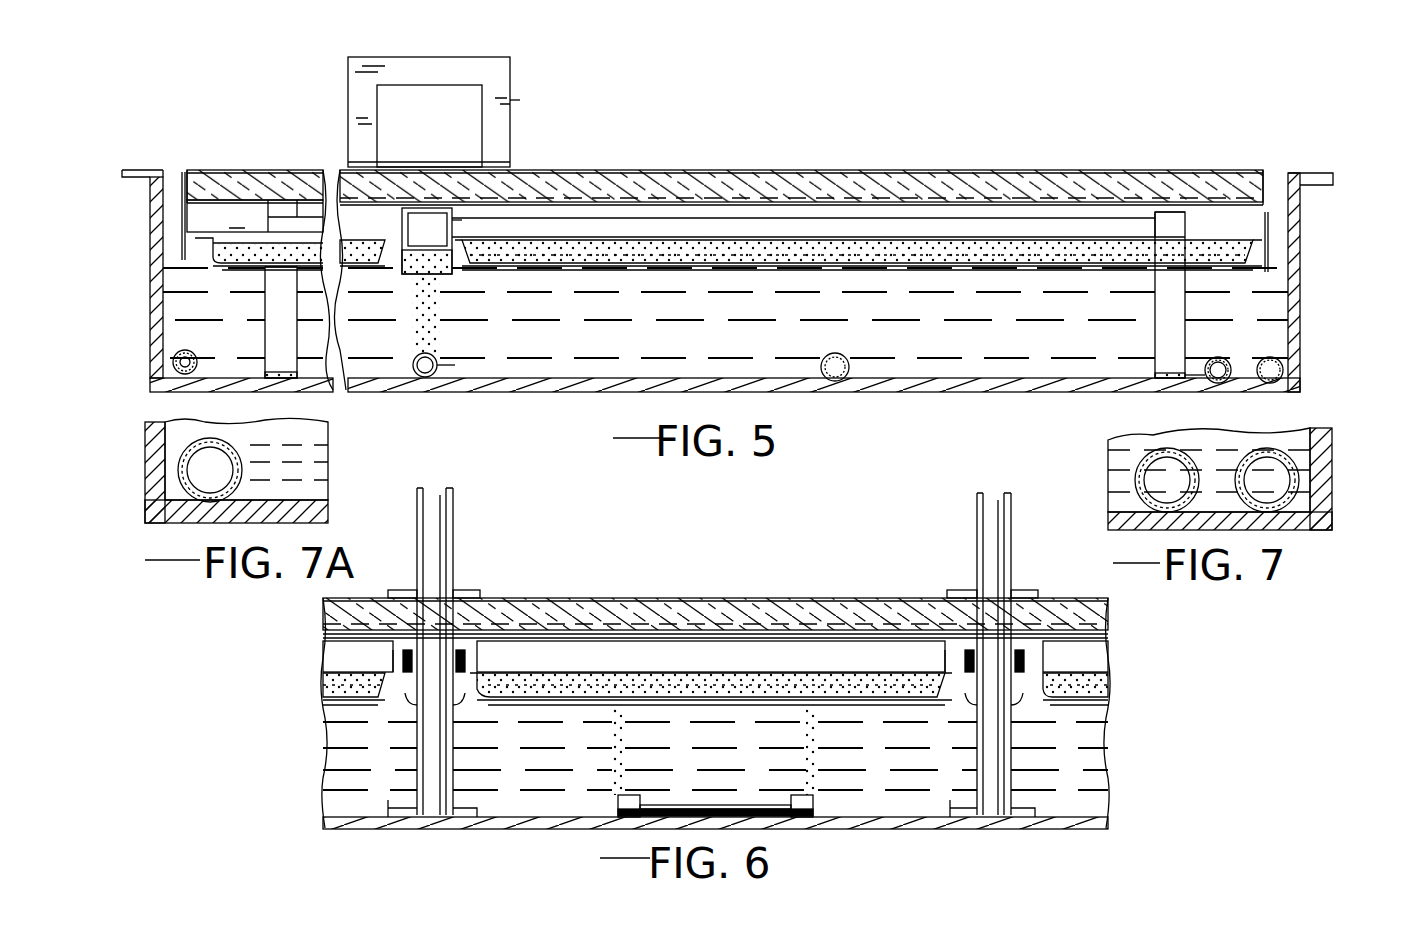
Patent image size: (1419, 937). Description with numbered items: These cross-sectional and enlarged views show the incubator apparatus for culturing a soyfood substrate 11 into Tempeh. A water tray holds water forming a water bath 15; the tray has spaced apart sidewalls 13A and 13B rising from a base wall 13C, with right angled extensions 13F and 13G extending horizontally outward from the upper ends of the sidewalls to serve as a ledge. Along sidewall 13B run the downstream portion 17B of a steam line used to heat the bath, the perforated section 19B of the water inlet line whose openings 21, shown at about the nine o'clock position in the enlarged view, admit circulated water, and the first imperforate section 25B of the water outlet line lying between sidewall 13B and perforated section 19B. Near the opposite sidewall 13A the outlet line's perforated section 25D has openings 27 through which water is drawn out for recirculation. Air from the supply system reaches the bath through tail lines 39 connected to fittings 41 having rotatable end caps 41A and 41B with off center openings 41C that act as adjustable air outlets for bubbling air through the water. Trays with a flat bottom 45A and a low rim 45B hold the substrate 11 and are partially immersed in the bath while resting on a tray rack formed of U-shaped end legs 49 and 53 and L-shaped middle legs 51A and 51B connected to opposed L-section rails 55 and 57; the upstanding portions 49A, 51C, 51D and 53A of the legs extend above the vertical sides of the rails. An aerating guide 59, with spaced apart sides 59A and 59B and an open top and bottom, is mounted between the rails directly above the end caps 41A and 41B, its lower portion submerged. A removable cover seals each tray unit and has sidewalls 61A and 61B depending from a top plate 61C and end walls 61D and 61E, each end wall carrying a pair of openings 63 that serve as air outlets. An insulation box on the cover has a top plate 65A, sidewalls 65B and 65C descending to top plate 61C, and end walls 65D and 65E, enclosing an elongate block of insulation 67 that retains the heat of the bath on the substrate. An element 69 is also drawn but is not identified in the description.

In FIG. 5, the soyfood substrate 11 is at (950, 245).
In FIG. 6, the soyfood substrate 11 is at (720, 683).
In FIG. 5, the sidewall 13A is at (150, 240).
In FIG. 7A, the sidewall 13A is at (148, 485).
In FIG. 5, the sidewall 13B is at (1300, 282).
In FIG. 7, the sidewall 13B is at (1332, 500).
In FIG. 5, the base wall 13C is at (910, 393).
In FIG. 7A, the base wall 13C is at (322, 519).
In FIG. 7, the base wall 13C is at (1120, 515).
In FIG. 6, the base wall 13C is at (900, 833).
In FIG. 5, the right angled extension 13F is at (127, 167).
In FIG. 5, the right angled extension 13G is at (1335, 173).
In FIG. 5, the water bath 15 is at (1005, 352).
In FIG. 6, the water bath 15 is at (880, 784).
In FIG. 5, the downstream portion of steam line 17B is at (843, 358).
In FIG. 5, the perforated section of water inlet line 19B is at (1216, 365).
In FIG. 7, the perforated section of water inlet line 19B is at (1135, 458).
In FIG. 5, the openings 21 is at (1205, 383).
In FIG. 7, the openings 21 is at (1120, 480).
In FIG. 5, the first imperforate section of water outlet line 25B is at (1283, 368).
In FIG. 7, the first imperforate section of water outlet line 25B is at (1273, 451).
In FIG. 5, the perforated section of water outlet line 25D is at (185, 350).
In FIG. 7A, the perforated section of water outlet line 25D is at (237, 469).
In FIG. 5, the openings 27 is at (185, 362).
In FIG. 7A, the openings 27 is at (222, 477).
In FIG. 6, the tail lines 39 is at (695, 794).
In FIG. 5, the fittings 41 is at (420, 375).
In FIG. 6, the fittings 41 is at (783, 832).
In FIG. 6, the rotatable end cap 41A is at (810, 820).
In FIG. 6, the rotatable end cap 41B is at (615, 816).
In FIG. 5, the off center openings 41C is at (450, 365).
In FIG. 5, the flat bottom 45A is at (345, 250).
In FIG. 6, the flat bottom 45A is at (325, 697).
In FIG. 5, the low rim 45B is at (360, 270).
In FIG. 6, the low rim 45B is at (330, 705).
In FIG. 5, the end leg member 49 is at (293, 380).
In FIG. 5, the upstanding portion 49A is at (284, 200).
In FIG. 6, the middle leg 51A is at (478, 788).
In FIG. 5, the middle leg 51B is at (462, 320).
In FIG. 6, the middle leg 51B is at (405, 785).
In FIG. 6, the upstanding portion 51C is at (523, 638).
In FIG. 5, the upstanding portion 51D is at (425, 212).
In FIG. 6, the upstanding portion 51D is at (395, 660).
In FIG. 5, the end leg member 53 is at (1162, 390).
In FIG. 5, the upstanding portion 53A is at (1140, 207).
In FIG. 6, the rail member 55 is at (487, 688).
In FIG. 6, the rail member 57 is at (390, 662).
In FIG. 5, the aerating guide 59 is at (508, 172).
In FIG. 5, the side of aerating guide 59A is at (429, 126).
In FIG. 5, the side of aerating guide 59B is at (462, 215).
In FIG. 6, the sidewall of cover 61A is at (450, 718).
In FIG. 6, the sidewall of cover 61B is at (410, 725).
In FIG. 5, the top plate of cover 61C is at (673, 202).
In FIG. 6, the top plate of cover 61C is at (323, 633).
In FIG. 5, the end wall of cover 61D is at (1245, 215).
In FIG. 5, the end wall of cover 61E is at (255, 216).
In FIG. 5, the openings 63 is at (187, 192).
In FIG. 5, the top plate of insulation box 65A is at (763, 172).
In FIG. 6, the top plate of insulation box 65A is at (593, 598).
In FIG. 6, the sidewall of insulation box 65B is at (455, 610).
In FIG. 6, the sidewall of insulation box 65C is at (433, 600).
In FIG. 5, the end wall of insulation box 65D is at (1268, 190).
In FIG. 5, the end wall of insulation box 65E is at (187, 171).
In FIG. 5, the insulation 67 is at (875, 195).
In FIG. 6, the insulation 67 is at (395, 618).
In FIG. 5, the post 69 is at (510, 140).
In FIG. 6, the post 69 is at (452, 490).